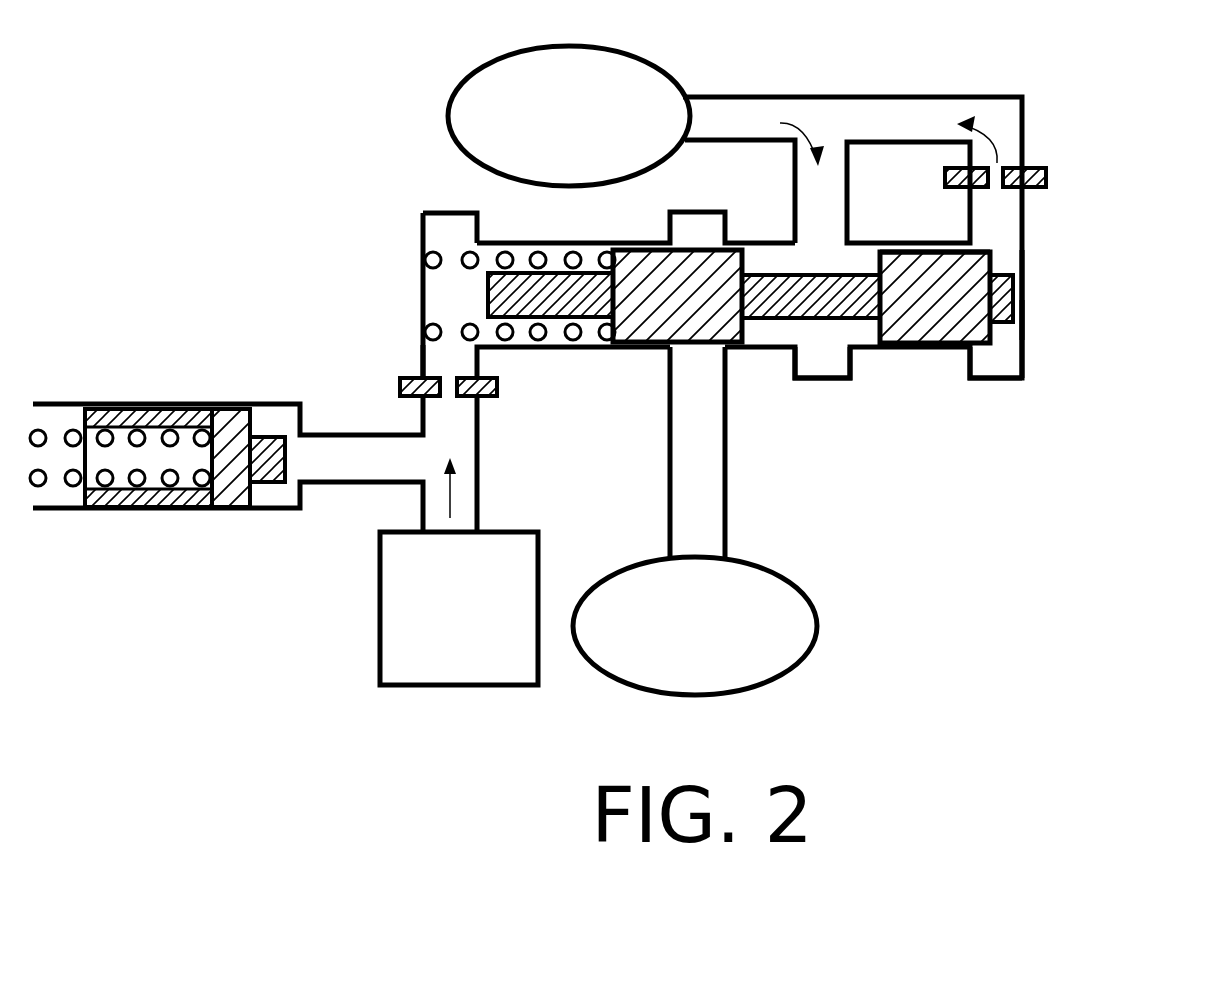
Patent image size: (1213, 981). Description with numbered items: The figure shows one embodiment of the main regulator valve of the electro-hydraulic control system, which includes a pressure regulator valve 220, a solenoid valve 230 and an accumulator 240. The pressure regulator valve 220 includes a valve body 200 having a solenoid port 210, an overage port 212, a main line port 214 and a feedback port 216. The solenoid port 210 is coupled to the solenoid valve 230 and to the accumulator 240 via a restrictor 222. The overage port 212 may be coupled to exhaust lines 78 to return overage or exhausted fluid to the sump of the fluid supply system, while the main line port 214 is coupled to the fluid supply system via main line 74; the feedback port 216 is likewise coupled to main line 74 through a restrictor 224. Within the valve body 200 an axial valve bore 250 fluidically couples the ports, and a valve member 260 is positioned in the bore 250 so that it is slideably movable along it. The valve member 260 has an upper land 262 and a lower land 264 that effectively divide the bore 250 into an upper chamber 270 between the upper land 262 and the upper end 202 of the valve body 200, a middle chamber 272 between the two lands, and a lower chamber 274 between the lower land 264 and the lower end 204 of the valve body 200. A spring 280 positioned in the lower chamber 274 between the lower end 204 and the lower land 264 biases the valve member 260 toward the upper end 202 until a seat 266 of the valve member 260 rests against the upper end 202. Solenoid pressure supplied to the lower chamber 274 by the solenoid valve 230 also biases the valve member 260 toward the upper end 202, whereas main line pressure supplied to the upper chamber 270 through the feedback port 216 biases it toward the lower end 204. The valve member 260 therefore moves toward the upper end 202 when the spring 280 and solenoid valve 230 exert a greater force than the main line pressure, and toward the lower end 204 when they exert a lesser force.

The main line 74 is at (569, 116).
The exhaust lines 78 is at (695, 626).
The valve body 200 is at (765, 352).
The upper end 202 is at (1022, 325).
The lower end 204 is at (422, 318).
The solenoid port 210 is at (430, 355).
The overage port 212 is at (703, 425).
The main line port 214 is at (795, 192).
The feedback port 216 is at (1007, 221).
The pressure regulator valve 220 is at (1112, 293).
The restrictor 222 is at (497, 400).
The restrictor 224 is at (1047, 165).
The solenoid valve 230 is at (459, 571).
The accumulator 240 is at (170, 548).
The axial valve bore 250 is at (440, 299).
The valve member 260 is at (940, 378).
The upper land 262 is at (970, 263).
The lower land 264 is at (668, 318).
The seat 266 is at (1018, 292).
The upper chamber 270 is at (997, 358).
The middle chamber 272 is at (817, 363).
The lower chamber 274 is at (443, 230).
The spring 280 is at (425, 249).